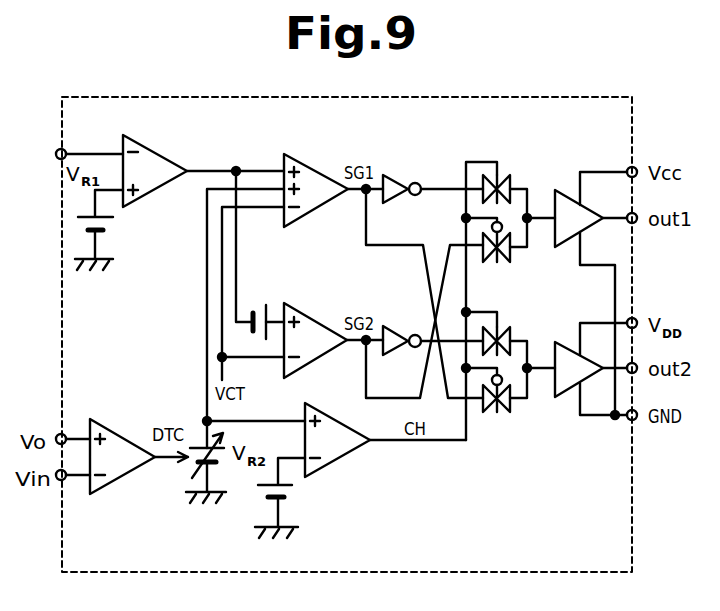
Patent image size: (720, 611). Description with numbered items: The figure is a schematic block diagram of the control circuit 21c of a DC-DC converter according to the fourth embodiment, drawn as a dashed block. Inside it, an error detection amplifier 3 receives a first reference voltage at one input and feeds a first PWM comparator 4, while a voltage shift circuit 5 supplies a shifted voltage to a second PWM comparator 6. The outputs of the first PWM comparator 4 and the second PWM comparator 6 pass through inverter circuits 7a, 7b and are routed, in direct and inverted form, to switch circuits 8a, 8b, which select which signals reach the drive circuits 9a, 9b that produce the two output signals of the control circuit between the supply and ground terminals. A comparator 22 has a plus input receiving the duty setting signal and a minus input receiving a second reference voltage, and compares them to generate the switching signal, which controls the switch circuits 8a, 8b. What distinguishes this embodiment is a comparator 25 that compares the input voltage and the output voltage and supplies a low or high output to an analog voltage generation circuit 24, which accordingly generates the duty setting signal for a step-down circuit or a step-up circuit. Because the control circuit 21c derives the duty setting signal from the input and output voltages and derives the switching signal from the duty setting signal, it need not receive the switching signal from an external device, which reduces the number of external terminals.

The control circuit 21c is at (612, 97).
The error detection amplifier 3 is at (158, 152).
The first PWM comparator 4 is at (312, 153).
The voltage shift circuit 5 is at (266, 305).
The second PWM comparator 6 is at (314, 304).
The inverter circuit 7a is at (398, 176).
The inverter circuit 7b is at (396, 326).
The switch circuit 8a is at (532, 163).
The switch circuit 8b is at (517, 437).
The drive circuit 9a is at (568, 243).
The drive circuit 9b is at (566, 393).
The comparator 22 is at (336, 463).
The analog voltage generation circuit 24 is at (200, 440).
The comparator 25 is at (125, 438).